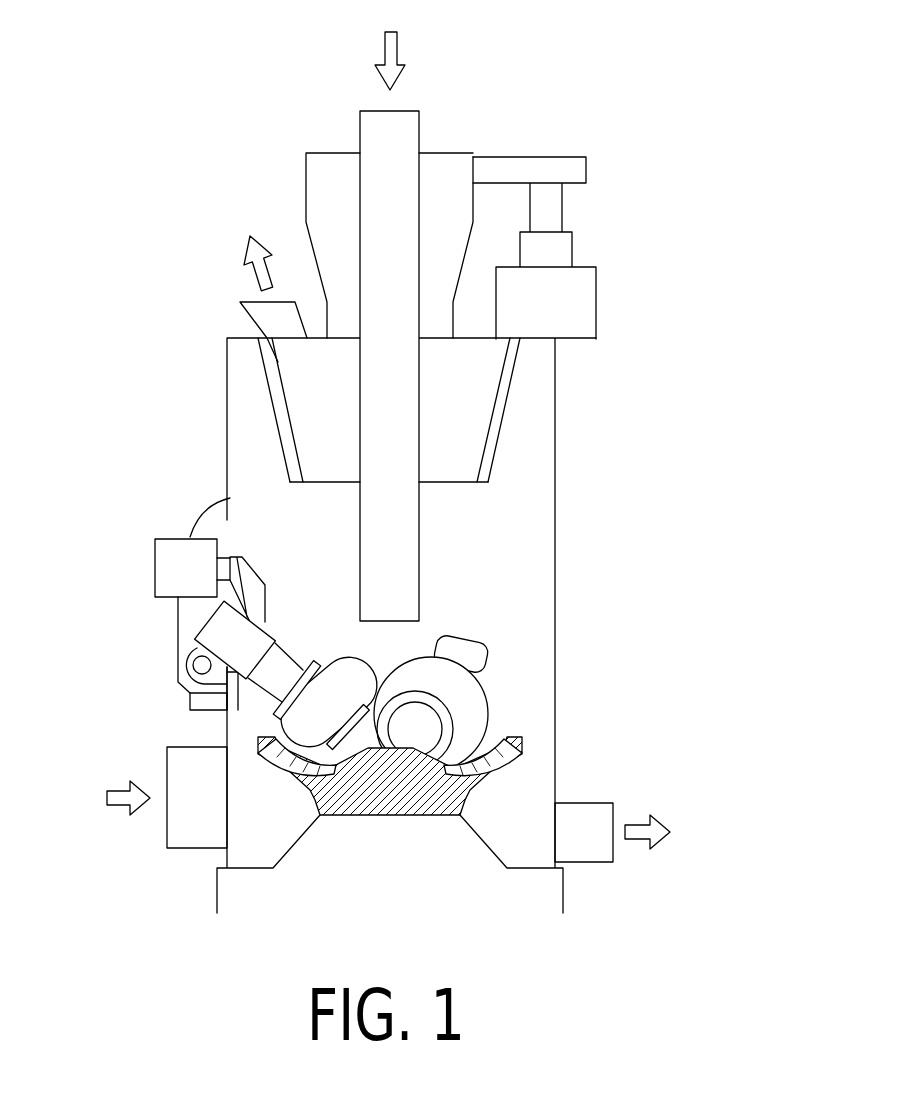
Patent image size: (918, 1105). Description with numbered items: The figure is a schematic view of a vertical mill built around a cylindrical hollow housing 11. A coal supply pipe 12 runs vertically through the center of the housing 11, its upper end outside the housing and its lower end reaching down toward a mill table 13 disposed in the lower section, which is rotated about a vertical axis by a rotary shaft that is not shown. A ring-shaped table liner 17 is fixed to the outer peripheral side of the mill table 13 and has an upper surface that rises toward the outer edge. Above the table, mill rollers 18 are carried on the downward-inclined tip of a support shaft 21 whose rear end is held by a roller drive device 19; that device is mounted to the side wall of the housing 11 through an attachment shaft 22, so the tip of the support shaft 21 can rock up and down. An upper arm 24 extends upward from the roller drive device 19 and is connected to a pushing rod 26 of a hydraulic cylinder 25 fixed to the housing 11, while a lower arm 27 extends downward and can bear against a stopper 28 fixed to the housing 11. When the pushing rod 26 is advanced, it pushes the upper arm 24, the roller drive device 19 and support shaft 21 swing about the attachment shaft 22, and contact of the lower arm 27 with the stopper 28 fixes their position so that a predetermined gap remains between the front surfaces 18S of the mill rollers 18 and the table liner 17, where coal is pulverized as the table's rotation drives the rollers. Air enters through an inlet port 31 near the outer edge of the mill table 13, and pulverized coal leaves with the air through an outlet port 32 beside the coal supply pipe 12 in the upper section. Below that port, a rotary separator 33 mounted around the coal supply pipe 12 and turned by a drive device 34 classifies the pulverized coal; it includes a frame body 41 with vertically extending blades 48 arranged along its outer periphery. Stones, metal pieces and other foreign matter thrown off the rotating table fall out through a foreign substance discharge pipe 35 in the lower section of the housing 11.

The housing 11 is at (555, 418).
The coal supply pipe 12 is at (419, 126).
The mill table 13 is at (473, 790).
The table liner 17 is at (475, 740).
The mill roller 18 is at (343, 680).
The front surface 18S is at (340, 817).
The roller drive device 19 is at (250, 632).
The support shaft 21 is at (263, 708).
The attachment shaft 22 is at (193, 665).
The upper arm 24 is at (255, 570).
The hydraulic cylinder 25 is at (155, 563).
The pushing rod 26 is at (223, 503).
The lower arm 27 is at (265, 688).
The stopper 28 is at (190, 700).
The inlet port 31 is at (177, 828).
The outlet port 32 is at (257, 316).
The rotary separator 33 is at (520, 355).
The drive device 34 is at (585, 300).
The foreign substance discharge pipe 35 is at (605, 848).
The frame body 41 is at (453, 482).
The blade 48 is at (500, 443).